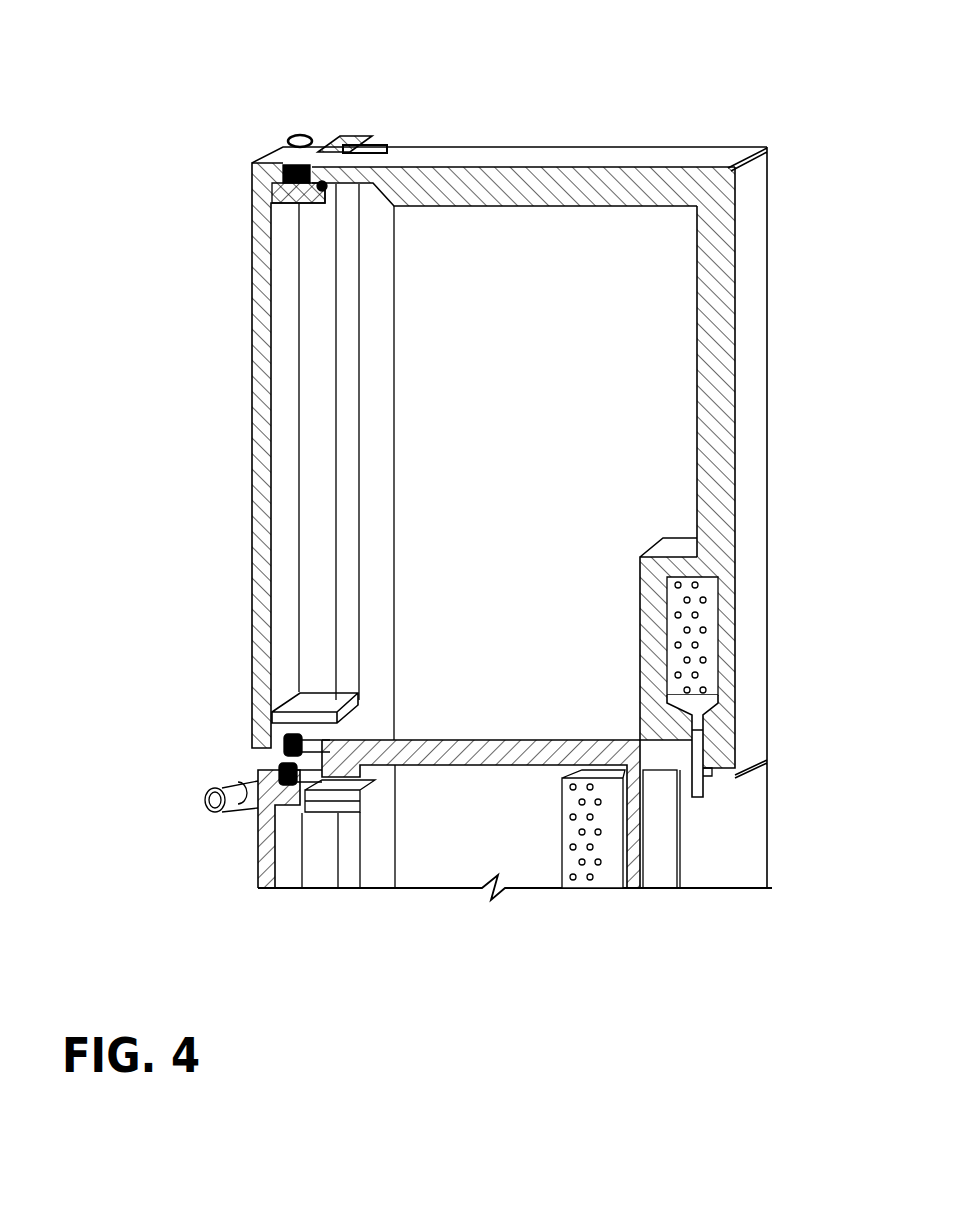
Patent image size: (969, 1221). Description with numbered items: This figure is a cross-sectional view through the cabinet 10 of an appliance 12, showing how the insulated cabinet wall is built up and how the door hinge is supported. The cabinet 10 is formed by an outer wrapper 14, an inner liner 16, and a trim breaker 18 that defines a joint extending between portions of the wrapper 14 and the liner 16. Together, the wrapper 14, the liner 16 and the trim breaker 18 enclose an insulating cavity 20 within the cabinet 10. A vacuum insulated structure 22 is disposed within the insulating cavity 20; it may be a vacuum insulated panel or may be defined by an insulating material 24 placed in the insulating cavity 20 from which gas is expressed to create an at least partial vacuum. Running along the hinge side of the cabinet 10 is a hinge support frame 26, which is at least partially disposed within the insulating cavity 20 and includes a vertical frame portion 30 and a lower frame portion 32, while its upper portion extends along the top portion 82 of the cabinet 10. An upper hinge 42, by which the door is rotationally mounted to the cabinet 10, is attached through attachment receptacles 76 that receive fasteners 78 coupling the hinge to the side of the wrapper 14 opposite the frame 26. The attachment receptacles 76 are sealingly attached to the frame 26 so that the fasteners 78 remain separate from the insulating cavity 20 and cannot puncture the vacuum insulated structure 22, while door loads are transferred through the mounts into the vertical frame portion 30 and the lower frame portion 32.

The cabinet 10 is at (552, 165).
The appliance 12 is at (652, 115).
The wrapper 14 is at (748, 186).
The liner 16 is at (698, 328).
The trim breaker 18 is at (336, 198).
The insulating cavity 20 is at (700, 167).
The vacuum insulated structure 22 is at (702, 400).
The insulating material 24 is at (710, 287).
The hinge support frame 26 is at (368, 605).
The vertical frame portion 30 is at (366, 512).
The lower frame portion 32 is at (329, 697).
The upper hinge 42 is at (334, 143).
The attachment receptacle 76 is at (285, 745).
The fastener 78 is at (353, 147).
The top portion 82 is at (318, 137).